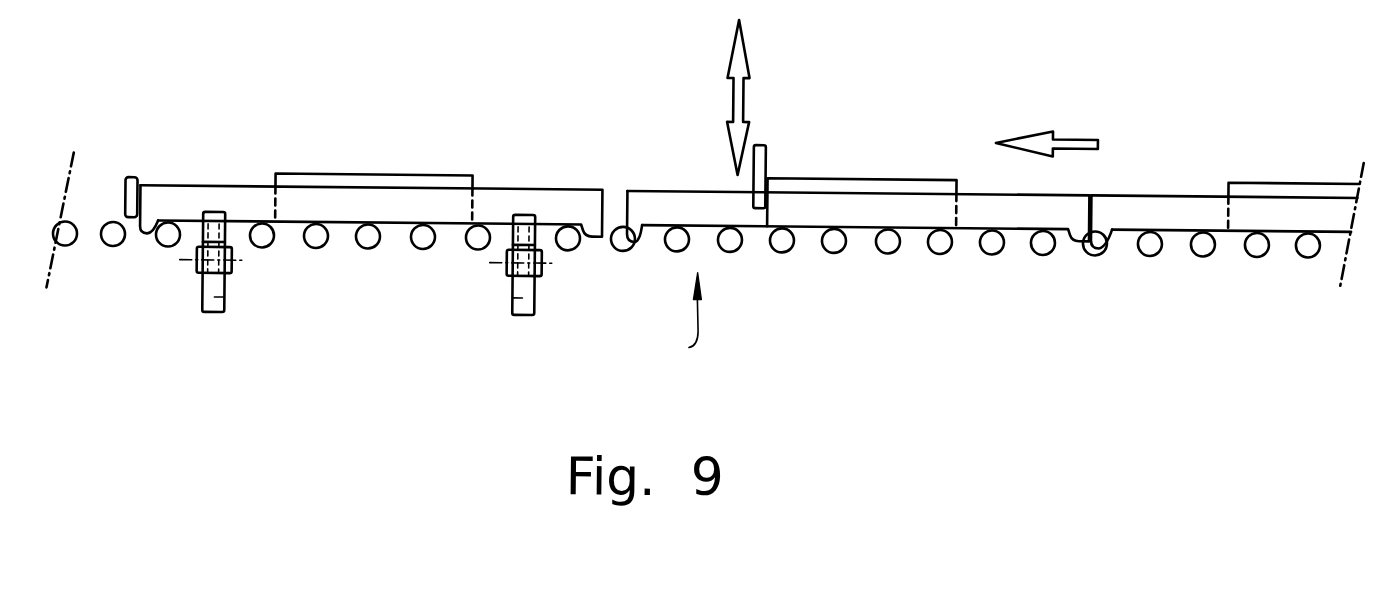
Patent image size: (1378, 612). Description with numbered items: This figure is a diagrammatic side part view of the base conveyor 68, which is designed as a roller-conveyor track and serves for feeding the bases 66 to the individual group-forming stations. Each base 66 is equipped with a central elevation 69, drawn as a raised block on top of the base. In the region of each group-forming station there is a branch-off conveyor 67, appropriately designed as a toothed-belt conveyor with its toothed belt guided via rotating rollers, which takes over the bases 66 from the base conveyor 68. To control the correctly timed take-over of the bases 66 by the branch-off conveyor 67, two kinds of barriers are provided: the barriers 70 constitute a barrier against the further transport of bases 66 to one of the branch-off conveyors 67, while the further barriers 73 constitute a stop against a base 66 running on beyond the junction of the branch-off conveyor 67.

The base 66 is at (503, 198).
The branch-off conveyor 67 is at (515, 294).
The base conveyor 68 is at (676, 318).
The central elevation 69 is at (857, 181).
The barrier 70 is at (767, 147).
The barrier 73 is at (131, 177).